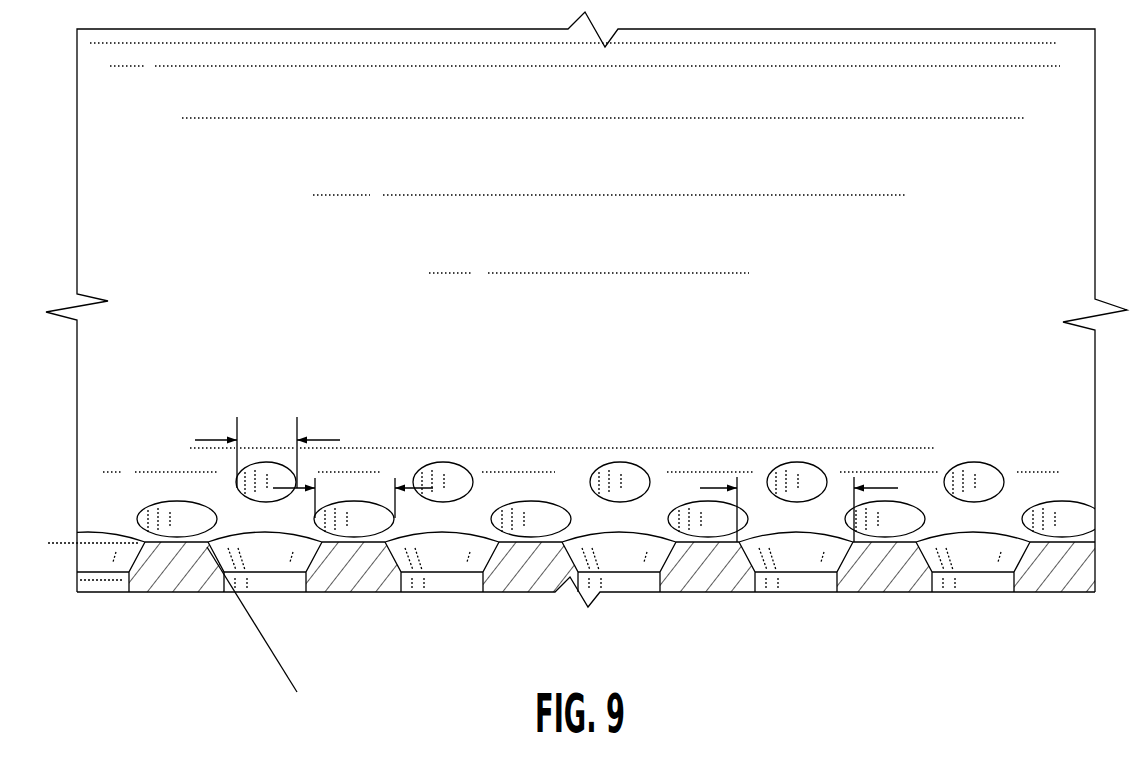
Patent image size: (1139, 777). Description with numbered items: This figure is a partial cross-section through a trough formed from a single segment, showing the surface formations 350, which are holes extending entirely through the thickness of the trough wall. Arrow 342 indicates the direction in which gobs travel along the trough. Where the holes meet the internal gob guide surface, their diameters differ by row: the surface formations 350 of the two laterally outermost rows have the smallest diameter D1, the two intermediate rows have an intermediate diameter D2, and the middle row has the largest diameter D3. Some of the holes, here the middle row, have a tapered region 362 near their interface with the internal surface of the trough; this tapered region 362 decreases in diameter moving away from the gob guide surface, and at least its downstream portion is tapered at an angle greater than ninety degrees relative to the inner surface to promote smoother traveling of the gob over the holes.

The arrow 342 is at (893, 368).
The surface formations 350 is at (477, 448).
The tapered region 362 is at (230, 537).
The diameter of outer-row surface formations D1 is at (323, 440).
The intermediate diameter D2 is at (400, 488).
The largest diameter D3 is at (880, 488).